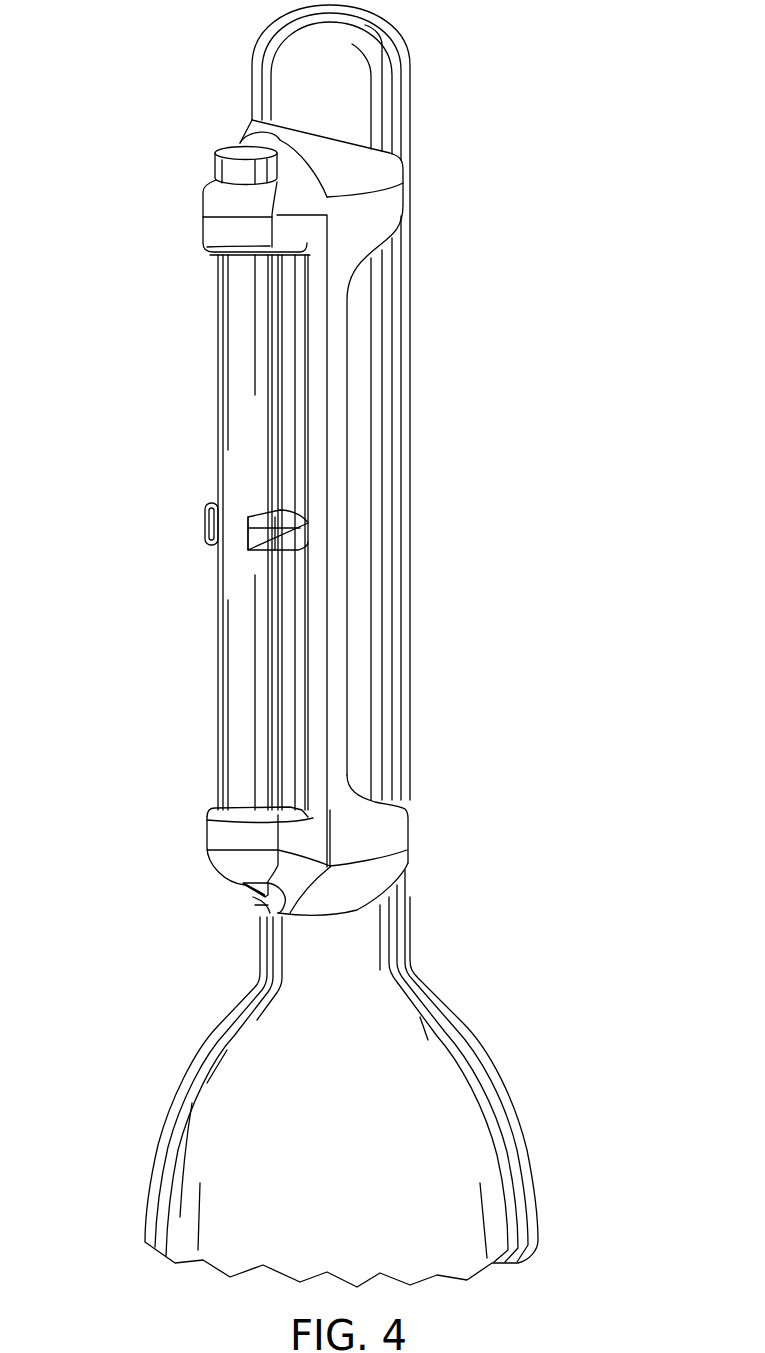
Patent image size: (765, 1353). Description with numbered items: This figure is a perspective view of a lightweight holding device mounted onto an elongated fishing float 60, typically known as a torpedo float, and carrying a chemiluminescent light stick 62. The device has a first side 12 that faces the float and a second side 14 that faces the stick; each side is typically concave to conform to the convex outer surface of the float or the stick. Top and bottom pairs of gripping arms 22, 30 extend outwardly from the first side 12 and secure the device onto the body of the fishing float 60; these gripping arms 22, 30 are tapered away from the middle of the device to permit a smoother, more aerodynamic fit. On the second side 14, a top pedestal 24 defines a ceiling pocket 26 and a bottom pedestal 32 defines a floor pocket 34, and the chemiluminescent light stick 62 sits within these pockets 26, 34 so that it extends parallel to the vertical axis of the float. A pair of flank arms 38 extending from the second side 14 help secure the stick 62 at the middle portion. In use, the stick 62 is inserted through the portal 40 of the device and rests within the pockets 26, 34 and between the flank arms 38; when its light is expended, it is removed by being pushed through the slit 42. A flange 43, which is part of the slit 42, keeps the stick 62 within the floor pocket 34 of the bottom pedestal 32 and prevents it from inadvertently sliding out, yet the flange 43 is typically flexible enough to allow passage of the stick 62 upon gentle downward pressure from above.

The first side 12 is at (222, 104).
The second side 14 is at (160, 166).
The gripping arms 22 is at (400, 200).
The top pedestal 24 is at (203, 229).
The ceiling pocket 26 is at (213, 255).
The gripping arms 30 is at (400, 830).
The bottom pedestal 32 is at (212, 827).
The floor pocket 34 is at (220, 807).
The flank arms 38 is at (205, 525).
The portal 40 is at (260, 140).
The slit 42 is at (277, 905).
The flange 43 is at (258, 897).
The fishing float 60 is at (407, 457).
The chemiluminescent light stick 62 is at (220, 403).